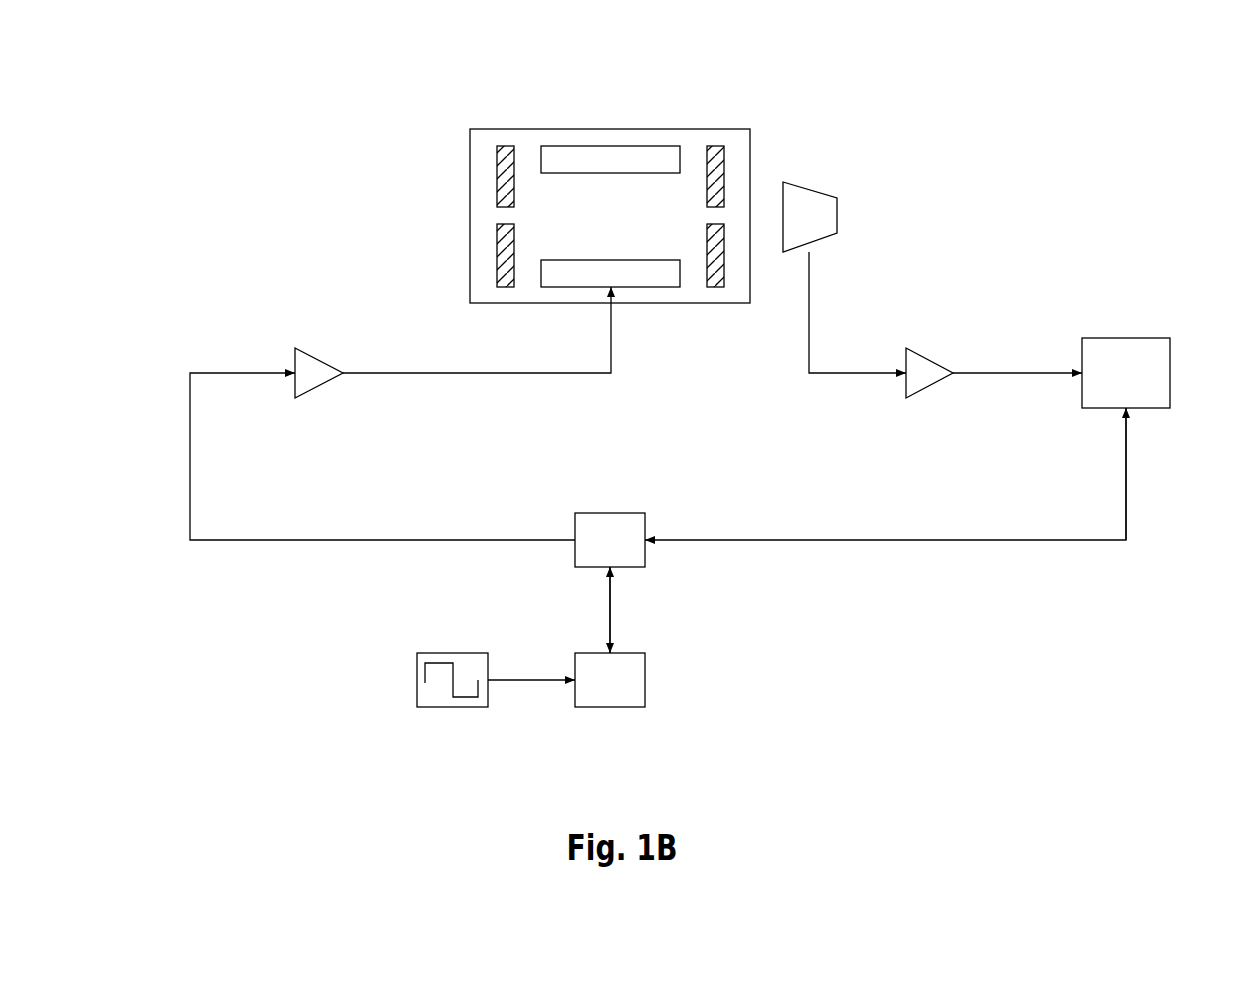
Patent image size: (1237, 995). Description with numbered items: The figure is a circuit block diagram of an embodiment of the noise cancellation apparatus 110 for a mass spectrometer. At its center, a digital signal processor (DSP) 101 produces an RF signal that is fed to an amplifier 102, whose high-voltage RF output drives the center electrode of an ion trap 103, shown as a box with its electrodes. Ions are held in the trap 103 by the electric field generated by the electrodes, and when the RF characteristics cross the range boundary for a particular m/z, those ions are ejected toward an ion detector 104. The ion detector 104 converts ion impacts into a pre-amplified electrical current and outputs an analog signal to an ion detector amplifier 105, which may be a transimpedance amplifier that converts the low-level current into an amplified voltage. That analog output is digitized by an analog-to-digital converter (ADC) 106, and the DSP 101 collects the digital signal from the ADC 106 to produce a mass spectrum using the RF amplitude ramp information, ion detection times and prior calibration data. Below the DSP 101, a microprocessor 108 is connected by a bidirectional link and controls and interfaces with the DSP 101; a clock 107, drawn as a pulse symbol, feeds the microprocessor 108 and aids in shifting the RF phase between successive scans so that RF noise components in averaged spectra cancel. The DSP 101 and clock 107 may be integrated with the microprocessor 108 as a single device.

The digital signal processor (DSP) 101 is at (610, 511).
The amplifier 102 is at (322, 351).
The ion trap 103 is at (610, 185).
The ion detector 104 is at (811, 191).
The ion detector amplifier 105 is at (932, 351).
The analog-to-digital converter (ADC) 106 is at (1126, 343).
The clock 107 is at (408, 680).
The microprocessor 108 is at (655, 680).
The sensor system 110 is at (1172, 76).